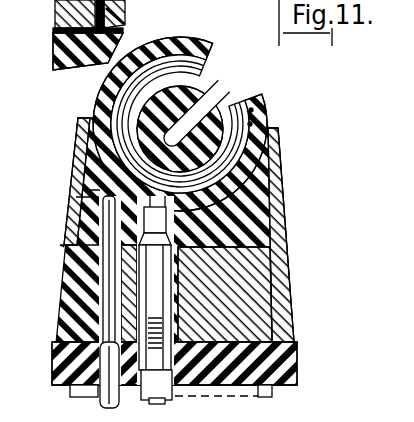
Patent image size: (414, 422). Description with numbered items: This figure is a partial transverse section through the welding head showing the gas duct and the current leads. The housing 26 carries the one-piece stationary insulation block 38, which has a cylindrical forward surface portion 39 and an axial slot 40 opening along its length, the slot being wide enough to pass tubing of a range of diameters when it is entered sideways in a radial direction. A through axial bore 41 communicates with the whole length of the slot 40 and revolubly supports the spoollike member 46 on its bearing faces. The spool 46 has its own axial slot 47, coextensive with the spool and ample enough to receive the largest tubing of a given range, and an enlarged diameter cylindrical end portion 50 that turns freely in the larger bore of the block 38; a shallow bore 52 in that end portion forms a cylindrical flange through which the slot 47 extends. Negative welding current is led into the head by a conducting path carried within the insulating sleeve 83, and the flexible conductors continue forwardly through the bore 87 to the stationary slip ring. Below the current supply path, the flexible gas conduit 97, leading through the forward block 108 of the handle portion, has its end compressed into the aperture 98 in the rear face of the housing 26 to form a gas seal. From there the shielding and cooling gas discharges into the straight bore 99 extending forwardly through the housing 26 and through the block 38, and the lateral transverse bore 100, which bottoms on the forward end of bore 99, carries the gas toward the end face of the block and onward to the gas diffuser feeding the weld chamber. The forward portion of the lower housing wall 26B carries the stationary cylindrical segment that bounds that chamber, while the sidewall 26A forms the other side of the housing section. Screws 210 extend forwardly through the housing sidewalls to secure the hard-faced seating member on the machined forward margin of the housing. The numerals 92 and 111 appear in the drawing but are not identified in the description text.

The housing 26 is at (196, 293).
The housing side wall 26A is at (284, 180).
The lower housing wall 26B is at (80, 244).
The insulation block 38 is at (75, 44).
The cylindrical forward surface portion 39 is at (195, 37).
The axial slot 40 is at (222, 92).
The through axial bore 41 is at (198, 139).
The revoluble spoollike member 46 is at (209, 126).
The axial slot 47 is at (214, 80).
The enlarged diameter cylindrical end portion 50 is at (252, 110).
The shallow bore 52 is at (251, 124).
The insulating sleeve 83 is at (155, 290).
The bore 87 is at (78, 186).
The nut 92 is at (165, 402).
The flexible gas conduit 97 is at (108, 396).
The bore 98 is at (64, 286).
The bore 99 is at (64, 247).
The transverse bore 100 is at (103, 199).
The forward block 108 is at (55, 53).
The stop 111 is at (263, 399).
The screws 210 is at (119, 13).